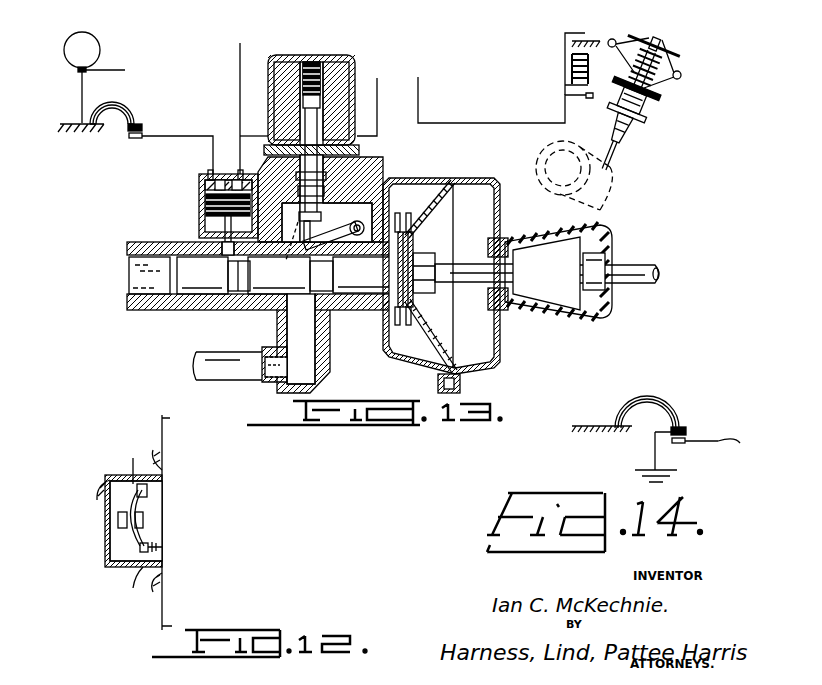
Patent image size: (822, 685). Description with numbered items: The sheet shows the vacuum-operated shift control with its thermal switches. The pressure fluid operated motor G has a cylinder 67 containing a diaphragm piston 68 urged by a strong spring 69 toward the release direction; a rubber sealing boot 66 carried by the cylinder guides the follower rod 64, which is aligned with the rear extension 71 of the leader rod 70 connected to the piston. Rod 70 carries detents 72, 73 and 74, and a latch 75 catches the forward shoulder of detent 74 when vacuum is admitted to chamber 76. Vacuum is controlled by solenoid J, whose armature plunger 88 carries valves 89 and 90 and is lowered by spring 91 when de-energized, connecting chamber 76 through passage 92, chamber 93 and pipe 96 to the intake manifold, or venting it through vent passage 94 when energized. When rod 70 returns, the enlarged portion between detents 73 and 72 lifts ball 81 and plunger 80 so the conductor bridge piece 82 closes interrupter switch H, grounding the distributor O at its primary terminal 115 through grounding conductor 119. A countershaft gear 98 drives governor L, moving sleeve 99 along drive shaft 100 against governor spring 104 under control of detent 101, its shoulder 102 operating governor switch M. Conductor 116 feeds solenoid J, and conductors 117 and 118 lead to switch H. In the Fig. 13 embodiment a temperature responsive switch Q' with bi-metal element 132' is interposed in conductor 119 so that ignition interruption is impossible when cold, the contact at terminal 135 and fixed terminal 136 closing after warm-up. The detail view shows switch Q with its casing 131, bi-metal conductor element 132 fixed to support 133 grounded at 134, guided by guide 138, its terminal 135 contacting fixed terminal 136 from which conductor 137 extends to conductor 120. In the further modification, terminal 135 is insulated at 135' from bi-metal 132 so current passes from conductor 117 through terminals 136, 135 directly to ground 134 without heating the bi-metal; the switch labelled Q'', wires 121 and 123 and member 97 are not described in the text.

In FIG. 13, the distributor O is at (67, 39).
In FIG. 13, the primary terminal 115 is at (78, 70).
In FIG. 13, the grounding conductor 119 is at (80, 97).
In FIG. 13, the bi-metal element 132' is at (124, 99).
In FIG. 13, the terminal 135 is at (152, 115).
In FIG. 12, the terminal 135 is at (125, 461).
In FIG. 14, the terminal 135 is at (707, 427).
In FIG. 13, the fixed terminal 136 is at (132, 140).
In FIG. 12, the fixed terminal 136 is at (148, 493).
In FIG. 14, the fixed terminal 136 is at (678, 447).
In FIG. 13, the temperature responsive switch Q' is at (85, 157).
In FIG. 13, the conductor 120 is at (240, 68).
In FIG. 13, the conductor 117 is at (262, 134).
In FIG. 14, the conductor 117 is at (742, 448).
In FIG. 13, the conductor 118 is at (238, 165).
In FIG. 13, the second conductor 116 is at (377, 80).
In FIG. 13, the conductor wire 121 is at (480, 123).
In FIG. 13, the ground connection 123 is at (590, 40).
In FIG. 13, the governor switch M is at (592, 95).
In FIG. 13, the governor L is at (690, 62).
In FIG. 13, the governor spring 104 is at (662, 86).
In FIG. 13, the shoulder 102 is at (655, 100).
In FIG. 13, the sleeve 99 is at (652, 114).
In FIG. 13, the detent 101 is at (636, 128).
In FIG. 13, the drive shaft 100 is at (624, 160).
In FIG. 13, the countershaft gear 98 is at (552, 150).
In FIG. 13, the solenoid J is at (353, 60).
In FIG. 13, the spring 91 is at (316, 58).
In FIG. 13, the armature plunger 88 is at (356, 100).
In FIG. 13, the valve 89 is at (357, 146).
In FIG. 13, the interrupter switch H is at (200, 176).
In FIG. 13, the conductor bridge piece 82 is at (204, 198).
In FIG. 13, the plunger 80 is at (200, 226).
In FIG. 13, the vent passage 94 is at (262, 192).
In FIG. 13, the chamber 93 is at (343, 180).
In FIG. 13, the valve 90 is at (364, 220).
In FIG. 13, the passage 92 is at (330, 225).
In FIG. 13, the detent 72 is at (162, 310).
In FIG. 13, the ball 81 is at (202, 275).
In FIG. 13, the detent 73 is at (236, 298).
In FIG. 13, the piston 97 is at (279, 275).
In FIG. 13, the latch 75 is at (353, 275).
In FIG. 13, the detent 74 is at (313, 307).
In FIG. 13, the pipe 96 is at (223, 374).
In FIG. 13, the diaphragm piston 68 is at (455, 182).
In FIG. 13, the leader rod 70 is at (348, 308).
In FIG. 13, the spring 69 is at (398, 328).
In FIG. 13, the chamber 76 is at (414, 347).
In FIG. 13, the cylinder 67 is at (472, 374).
In FIG. 13, the pressure fluid operated motor G is at (387, 370).
In FIG. 12, the pressure fluid operated motor G is at (160, 418).
In FIG. 13, the rear extension 71 is at (478, 267).
In FIG. 13, the follower rod 64 is at (637, 283).
In FIG. 13, the rubber sealing boot 66 is at (608, 236).
In FIG. 12, the conductor 137 is at (118, 476).
In FIG. 12, the enclosing casing 131 is at (114, 569).
In FIG. 12, the bi-metal conductor element 132 is at (169, 518).
In FIG. 14, the bi-metal conductor element 132 is at (631, 404).
In FIG. 12, the guide 138 is at (118, 516).
In FIG. 12, the ground 134 is at (160, 547).
In FIG. 14, the ground 134 is at (655, 468).
In FIG. 12, the switch Q is at (88, 549).
In FIG. 12, the support 133 is at (126, 587).
In FIG. 14, the insulation 135' is at (704, 411).
In FIG. 14, the thermostatic switch Q'' is at (723, 441).